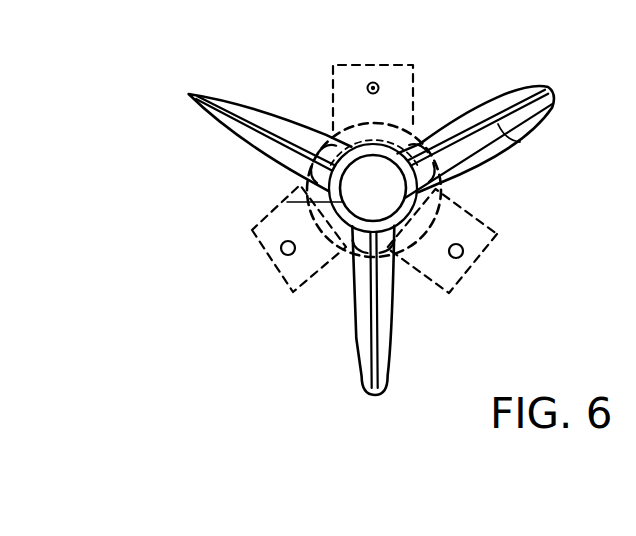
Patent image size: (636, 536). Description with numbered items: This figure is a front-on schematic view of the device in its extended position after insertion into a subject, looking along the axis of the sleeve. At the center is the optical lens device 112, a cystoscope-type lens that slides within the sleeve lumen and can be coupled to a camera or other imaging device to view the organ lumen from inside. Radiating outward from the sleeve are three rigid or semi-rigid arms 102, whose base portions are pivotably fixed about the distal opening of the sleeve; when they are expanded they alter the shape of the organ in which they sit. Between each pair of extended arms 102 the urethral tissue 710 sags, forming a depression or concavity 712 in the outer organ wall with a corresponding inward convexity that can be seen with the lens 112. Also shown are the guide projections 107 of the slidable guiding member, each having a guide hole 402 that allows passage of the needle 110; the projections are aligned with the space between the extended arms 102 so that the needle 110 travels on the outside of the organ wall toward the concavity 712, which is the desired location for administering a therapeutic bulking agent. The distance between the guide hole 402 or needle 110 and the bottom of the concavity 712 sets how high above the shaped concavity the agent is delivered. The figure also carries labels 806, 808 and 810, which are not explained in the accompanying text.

The arm 102 is at (238, 130).
The guide projection 107 is at (413, 92).
The needle 110 is at (368, 82).
The optical lens device 112 is at (425, 147).
The guide hole 402 is at (380, 88).
The urethral tissue 710 is at (297, 127).
The concavity 712 is at (372, 154).
The component 806 is at (79, 531).
The component 808 is at (220, 535).
The component 810 is at (400, 535).